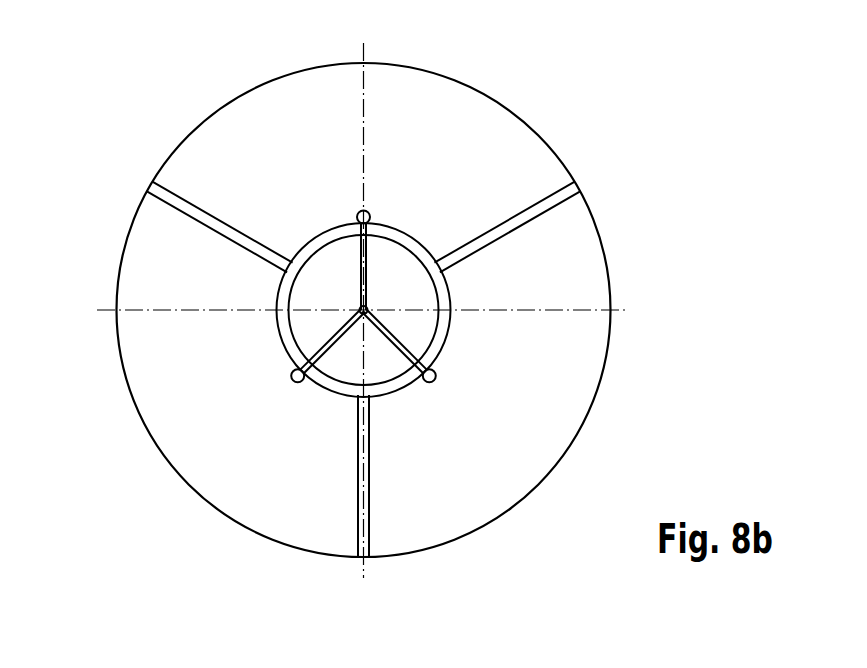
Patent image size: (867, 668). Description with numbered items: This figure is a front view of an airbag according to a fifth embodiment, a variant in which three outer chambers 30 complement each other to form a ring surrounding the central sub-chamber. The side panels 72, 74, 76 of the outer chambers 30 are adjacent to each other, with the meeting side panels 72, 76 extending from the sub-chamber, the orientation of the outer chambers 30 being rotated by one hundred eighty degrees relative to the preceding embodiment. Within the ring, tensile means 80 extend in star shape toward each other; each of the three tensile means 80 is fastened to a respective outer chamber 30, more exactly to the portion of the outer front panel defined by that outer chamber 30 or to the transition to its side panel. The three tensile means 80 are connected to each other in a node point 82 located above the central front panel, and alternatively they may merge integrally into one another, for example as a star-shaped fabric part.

The outer chamber 30 is at (248, 108).
The side panel 72 is at (166, 202).
The side panel 74 is at (365, 345).
The side panel 76 is at (583, 216).
The tensile means 80 is at (366, 303).
The node point 82 is at (361, 303).